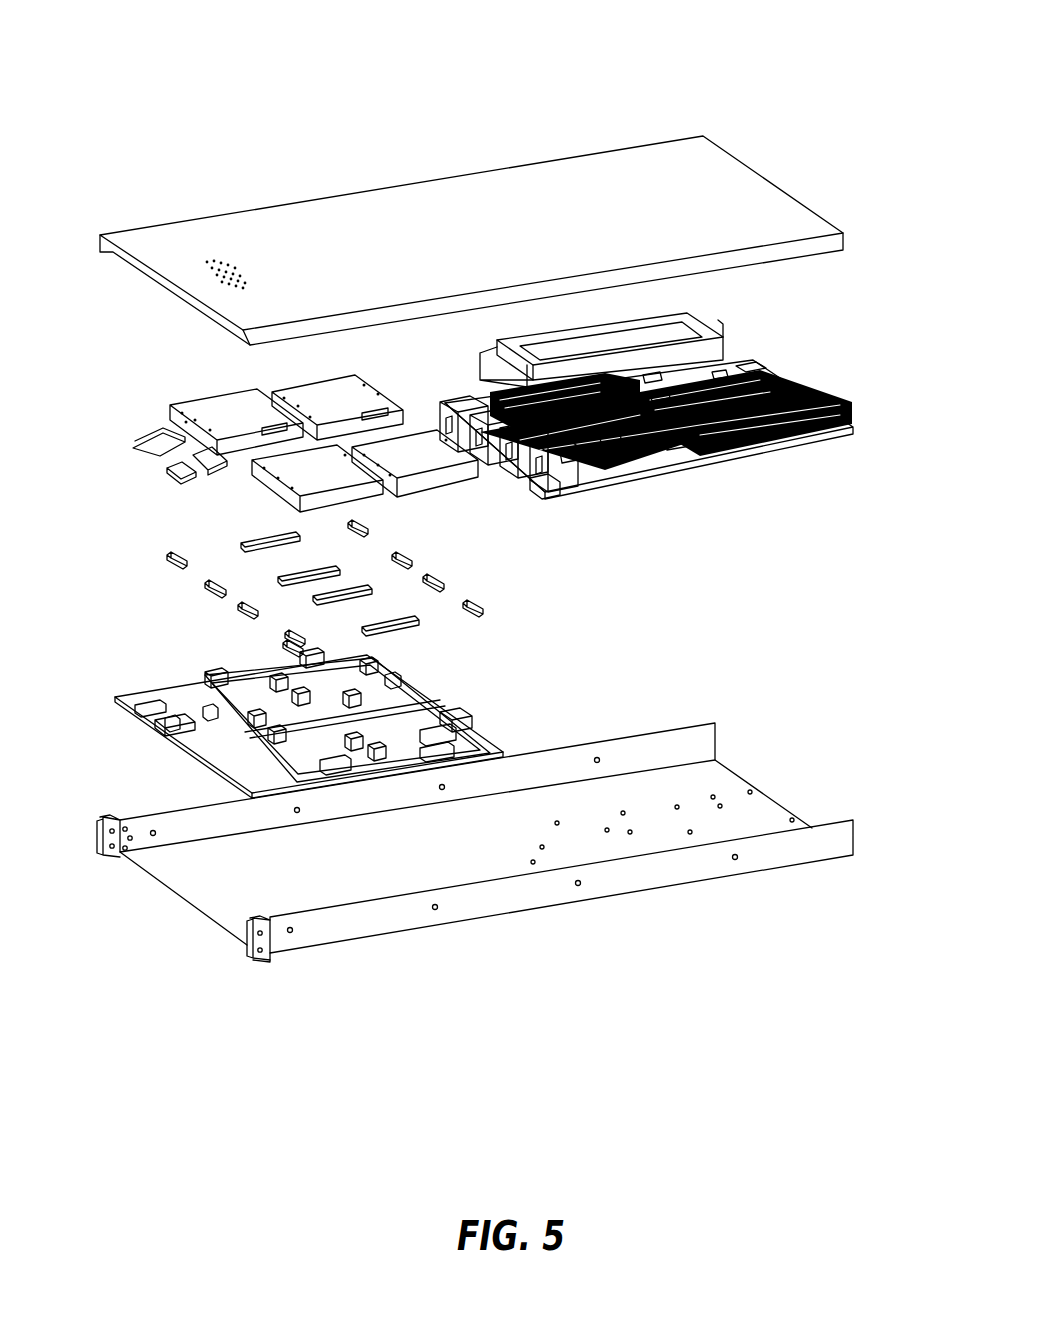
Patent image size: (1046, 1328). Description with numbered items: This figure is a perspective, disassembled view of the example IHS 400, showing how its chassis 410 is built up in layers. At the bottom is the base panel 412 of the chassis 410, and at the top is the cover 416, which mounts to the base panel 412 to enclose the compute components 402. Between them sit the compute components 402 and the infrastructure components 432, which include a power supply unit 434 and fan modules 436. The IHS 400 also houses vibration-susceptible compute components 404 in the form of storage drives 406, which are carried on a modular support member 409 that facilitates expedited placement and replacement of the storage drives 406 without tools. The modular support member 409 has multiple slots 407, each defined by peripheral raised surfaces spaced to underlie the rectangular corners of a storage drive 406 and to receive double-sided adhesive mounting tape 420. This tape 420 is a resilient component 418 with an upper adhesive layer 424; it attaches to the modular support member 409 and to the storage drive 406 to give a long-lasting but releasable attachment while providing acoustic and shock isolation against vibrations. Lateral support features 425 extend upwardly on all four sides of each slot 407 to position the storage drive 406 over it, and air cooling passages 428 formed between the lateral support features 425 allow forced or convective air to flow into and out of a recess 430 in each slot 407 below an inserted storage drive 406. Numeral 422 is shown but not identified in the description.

The IHS 400 is at (228, 178).
The chassis 410 is at (351, 187).
The cover 416 is at (700, 188).
The power supply unit (PSU) 434 is at (845, 250).
The infrastructure components 432 is at (699, 312).
The compute components 402 is at (752, 338).
The fan modules 436 is at (545, 485).
The vibration-susceptible compute components 404 is at (191, 386).
The storage drives 406 is at (165, 428).
The double-sided adhesive mounting tape 420 is at (453, 586).
The upper adhesive layer 424 is at (240, 540).
The resilient component 418 is at (484, 608).
The bracket 422 is at (395, 633).
The modular support member 409 is at (150, 688).
The lateral support features 425 is at (222, 675).
The slots 407 is at (405, 735).
The air cooling passages 428 is at (500, 735).
The recess 430 is at (167, 743).
The base panel 412 is at (628, 892).